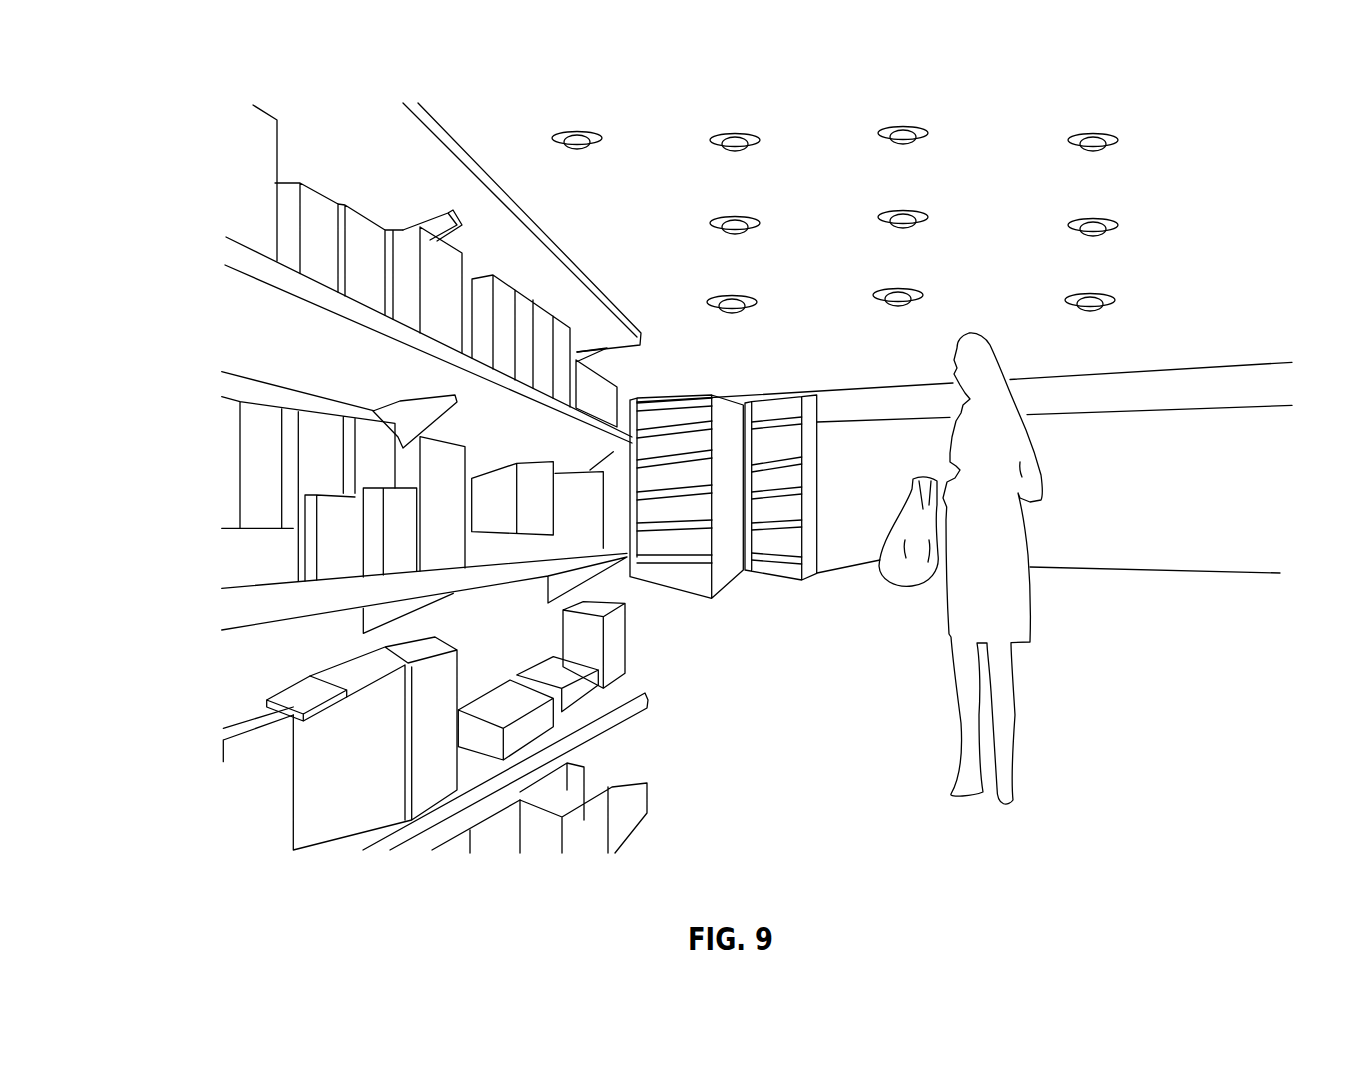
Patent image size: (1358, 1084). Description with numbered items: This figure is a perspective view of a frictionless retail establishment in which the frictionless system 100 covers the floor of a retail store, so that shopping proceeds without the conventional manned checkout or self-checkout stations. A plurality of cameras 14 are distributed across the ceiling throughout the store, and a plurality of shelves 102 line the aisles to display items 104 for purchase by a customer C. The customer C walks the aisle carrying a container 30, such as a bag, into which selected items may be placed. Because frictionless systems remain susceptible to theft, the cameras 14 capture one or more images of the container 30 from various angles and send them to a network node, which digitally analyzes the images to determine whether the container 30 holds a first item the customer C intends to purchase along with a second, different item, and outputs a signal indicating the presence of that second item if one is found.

The frictionless system 100 is at (1225, 83).
The cameras 14 is at (882, 130).
The shelves 102 is at (232, 240).
The items 104 is at (577, 692).
The container 30 is at (918, 588).
The customer C is at (1035, 447).